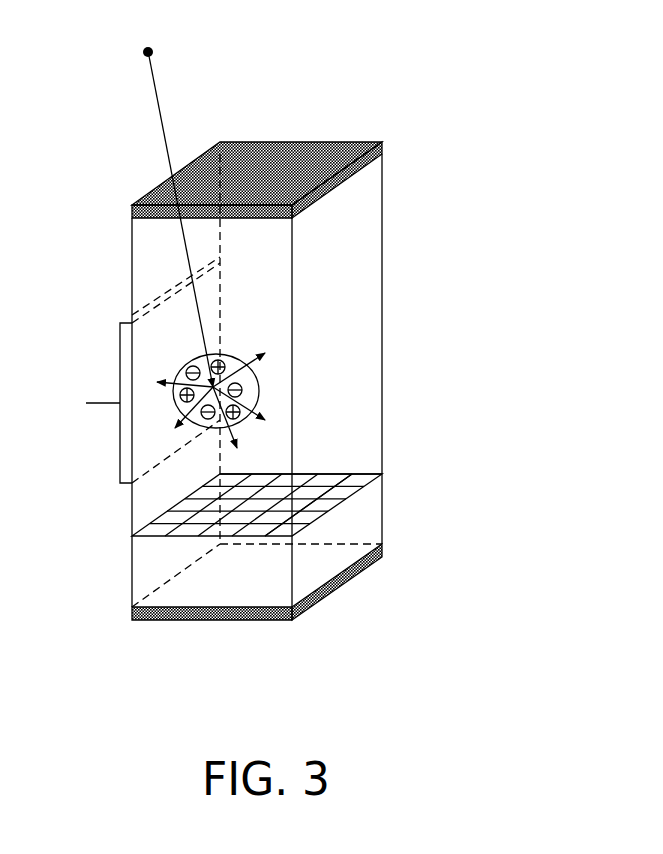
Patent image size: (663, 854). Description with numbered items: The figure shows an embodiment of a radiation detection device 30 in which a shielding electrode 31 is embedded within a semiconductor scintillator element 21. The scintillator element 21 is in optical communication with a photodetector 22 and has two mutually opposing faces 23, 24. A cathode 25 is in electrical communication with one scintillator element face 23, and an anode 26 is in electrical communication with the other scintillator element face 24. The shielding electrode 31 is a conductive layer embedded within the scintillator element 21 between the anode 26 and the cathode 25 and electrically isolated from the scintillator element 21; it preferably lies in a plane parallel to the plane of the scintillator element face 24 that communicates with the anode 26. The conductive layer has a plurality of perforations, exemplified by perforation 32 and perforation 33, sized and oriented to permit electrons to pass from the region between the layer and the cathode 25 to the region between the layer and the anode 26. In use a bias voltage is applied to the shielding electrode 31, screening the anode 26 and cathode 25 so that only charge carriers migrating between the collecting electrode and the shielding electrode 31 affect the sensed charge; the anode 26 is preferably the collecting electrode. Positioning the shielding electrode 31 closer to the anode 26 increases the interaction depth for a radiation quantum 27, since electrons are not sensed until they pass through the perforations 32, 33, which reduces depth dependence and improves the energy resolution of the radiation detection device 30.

The radiation detection device 30 is at (437, 74).
The semiconductor scintillator element 21 is at (132, 282).
The photodetector 22 is at (120, 352).
The scintillator element face 23 is at (367, 170).
The scintillator element face 24 is at (155, 597).
The cathode 25 is at (285, 150).
The anode 26 is at (215, 618).
The radiation quantum 27 is at (138, 52).
The shielding electrode 31 is at (330, 472).
The perforation 32 is at (357, 478).
The perforation 33 is at (340, 493).